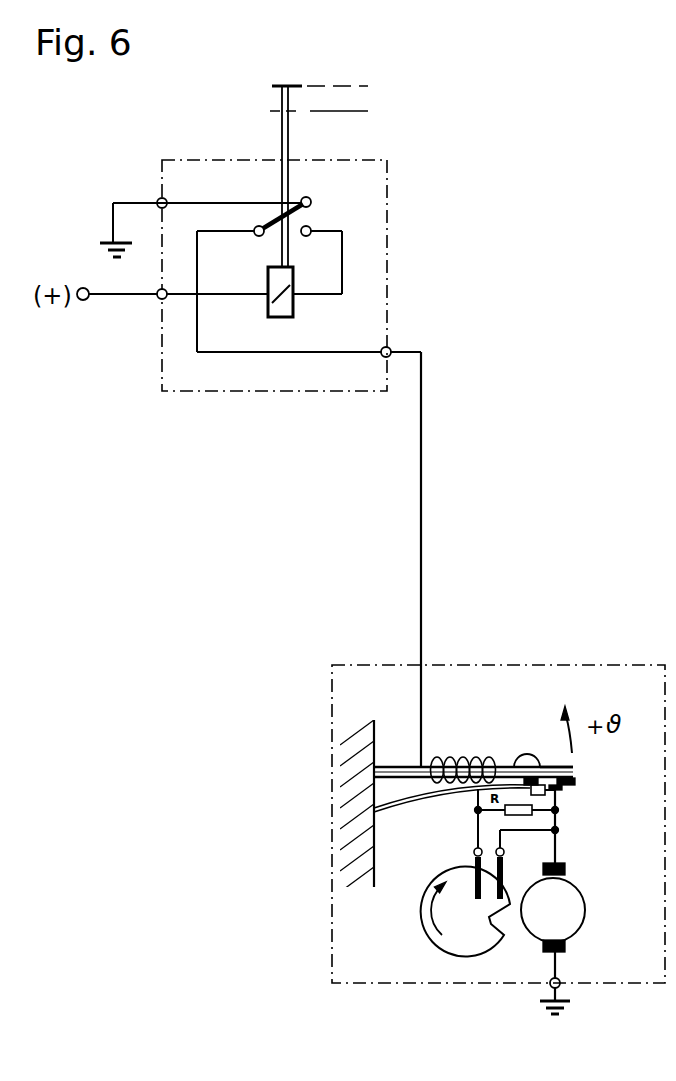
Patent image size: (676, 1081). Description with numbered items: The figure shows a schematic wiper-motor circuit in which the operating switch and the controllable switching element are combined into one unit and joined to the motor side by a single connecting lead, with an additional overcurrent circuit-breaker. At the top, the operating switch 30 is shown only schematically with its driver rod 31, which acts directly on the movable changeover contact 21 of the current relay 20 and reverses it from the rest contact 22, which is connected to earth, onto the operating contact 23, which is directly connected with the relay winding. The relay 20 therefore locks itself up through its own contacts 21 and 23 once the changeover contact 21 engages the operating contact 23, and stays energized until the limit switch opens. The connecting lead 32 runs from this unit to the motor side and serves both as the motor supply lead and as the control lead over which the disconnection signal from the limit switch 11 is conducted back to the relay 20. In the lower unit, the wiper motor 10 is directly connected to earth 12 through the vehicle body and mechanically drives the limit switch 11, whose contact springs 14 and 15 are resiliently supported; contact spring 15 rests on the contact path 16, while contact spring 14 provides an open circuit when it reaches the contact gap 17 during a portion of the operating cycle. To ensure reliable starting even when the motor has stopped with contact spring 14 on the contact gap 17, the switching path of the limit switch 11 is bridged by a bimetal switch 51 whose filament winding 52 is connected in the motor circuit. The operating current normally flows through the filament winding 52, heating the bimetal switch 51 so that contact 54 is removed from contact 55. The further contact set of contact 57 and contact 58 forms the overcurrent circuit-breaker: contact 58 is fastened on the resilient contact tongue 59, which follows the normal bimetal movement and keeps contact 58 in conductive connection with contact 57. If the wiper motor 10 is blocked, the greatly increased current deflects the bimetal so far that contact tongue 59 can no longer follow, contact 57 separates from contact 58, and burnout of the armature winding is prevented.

The wiper motor 10 is at (587, 908).
The limit switch 11 is at (459, 949).
The earth 12 is at (562, 995).
The contact spring 14 is at (503, 866).
The contact spring 15 is at (473, 873).
The contact path 16 is at (473, 933).
The contact gap 17 is at (509, 922).
The current relay 20 is at (295, 300).
The changeover contact 21 is at (278, 212).
The rest contact 22 is at (308, 198).
The operating contact 23 is at (309, 227).
The operating switch 30 is at (351, 161).
The driver rod 31 is at (282, 145).
The connecting lead 32 is at (421, 541).
The bimetal switch 51 is at (398, 766).
The filament winding 52 is at (440, 757).
The contact 54 is at (533, 765).
The contact 55 is at (562, 788).
The contact 57 is at (545, 767).
The contact 58 is at (552, 796).
The contact tongue 59 is at (394, 813).